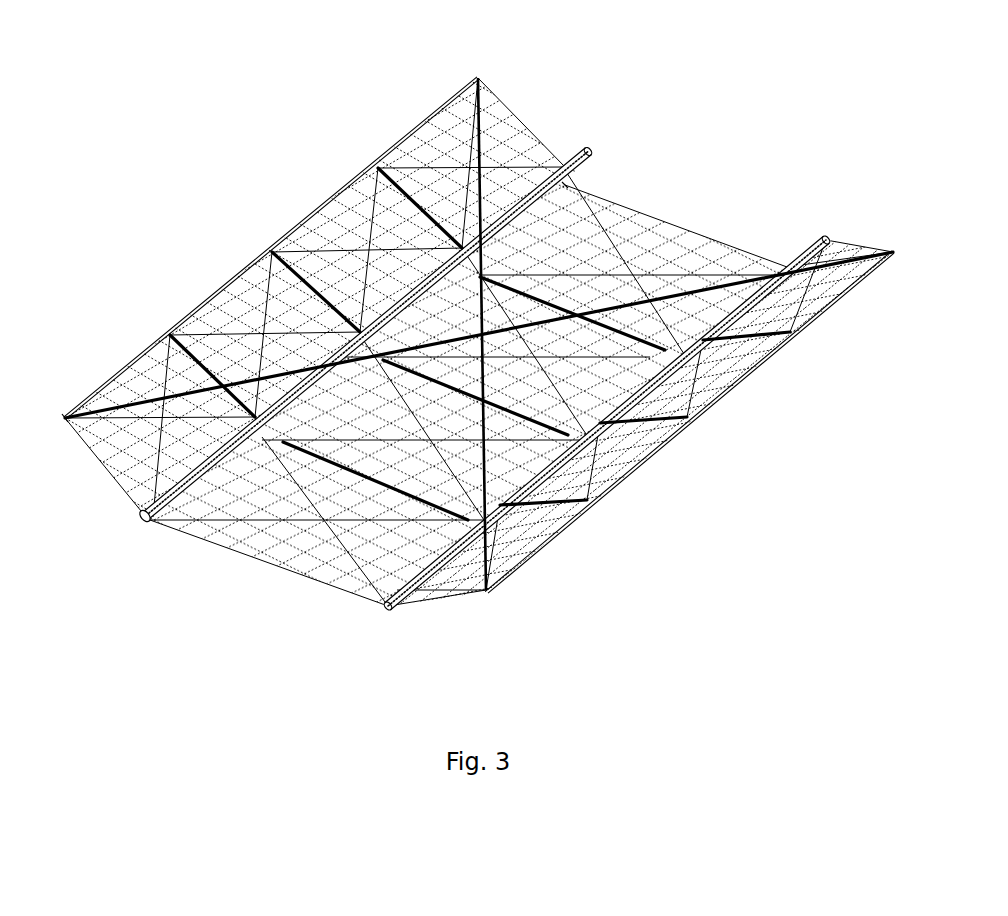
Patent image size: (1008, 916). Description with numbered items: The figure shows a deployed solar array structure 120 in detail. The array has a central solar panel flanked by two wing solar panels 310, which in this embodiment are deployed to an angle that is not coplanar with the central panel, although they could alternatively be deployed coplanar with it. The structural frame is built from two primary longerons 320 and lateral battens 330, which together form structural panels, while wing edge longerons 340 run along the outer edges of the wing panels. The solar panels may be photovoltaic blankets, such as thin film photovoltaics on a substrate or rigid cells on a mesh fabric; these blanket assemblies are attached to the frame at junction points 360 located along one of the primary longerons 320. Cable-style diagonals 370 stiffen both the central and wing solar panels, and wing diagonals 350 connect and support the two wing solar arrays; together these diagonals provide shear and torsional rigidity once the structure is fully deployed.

The solar array structure 120 is at (617, 556).
The wing solar panel 310 is at (490, 302).
The primary longeron 320 is at (503, 322).
The lateral batten 330 is at (480, 384).
The wing edge longeron 340 is at (479, 344).
The wing diagonal 350 is at (479, 316).
The junction point 360 is at (143, 582).
The cable-style diagonal 370 is at (354, 297).